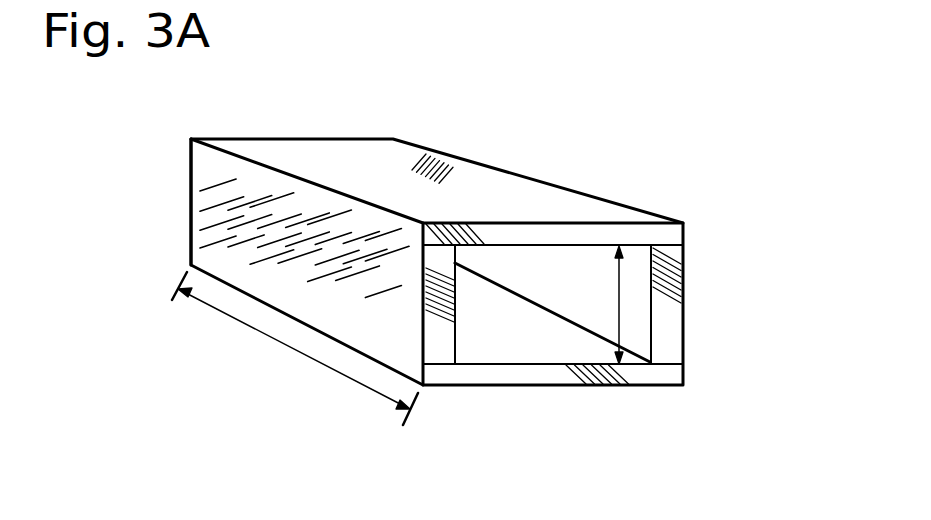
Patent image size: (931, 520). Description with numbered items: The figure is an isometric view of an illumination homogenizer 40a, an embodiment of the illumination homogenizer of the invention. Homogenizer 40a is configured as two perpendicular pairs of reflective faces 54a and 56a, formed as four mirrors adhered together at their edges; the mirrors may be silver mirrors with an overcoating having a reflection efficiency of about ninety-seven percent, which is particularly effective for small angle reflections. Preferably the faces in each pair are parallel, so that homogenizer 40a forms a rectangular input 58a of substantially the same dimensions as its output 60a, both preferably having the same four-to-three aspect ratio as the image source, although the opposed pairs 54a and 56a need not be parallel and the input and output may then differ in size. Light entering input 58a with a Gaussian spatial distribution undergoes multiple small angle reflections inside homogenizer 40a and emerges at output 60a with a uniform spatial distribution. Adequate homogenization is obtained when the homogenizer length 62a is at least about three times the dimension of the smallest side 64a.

The illumination homogenizer 40a is at (722, 135).
The rectangular input 58a is at (253, 140).
The pair of reflective faces 56a is at (545, 222).
The pair of reflective faces 54a is at (455, 330).
The output 60a is at (523, 310).
The smallest side 64a is at (617, 283).
The homogenizer length 62a is at (282, 347).